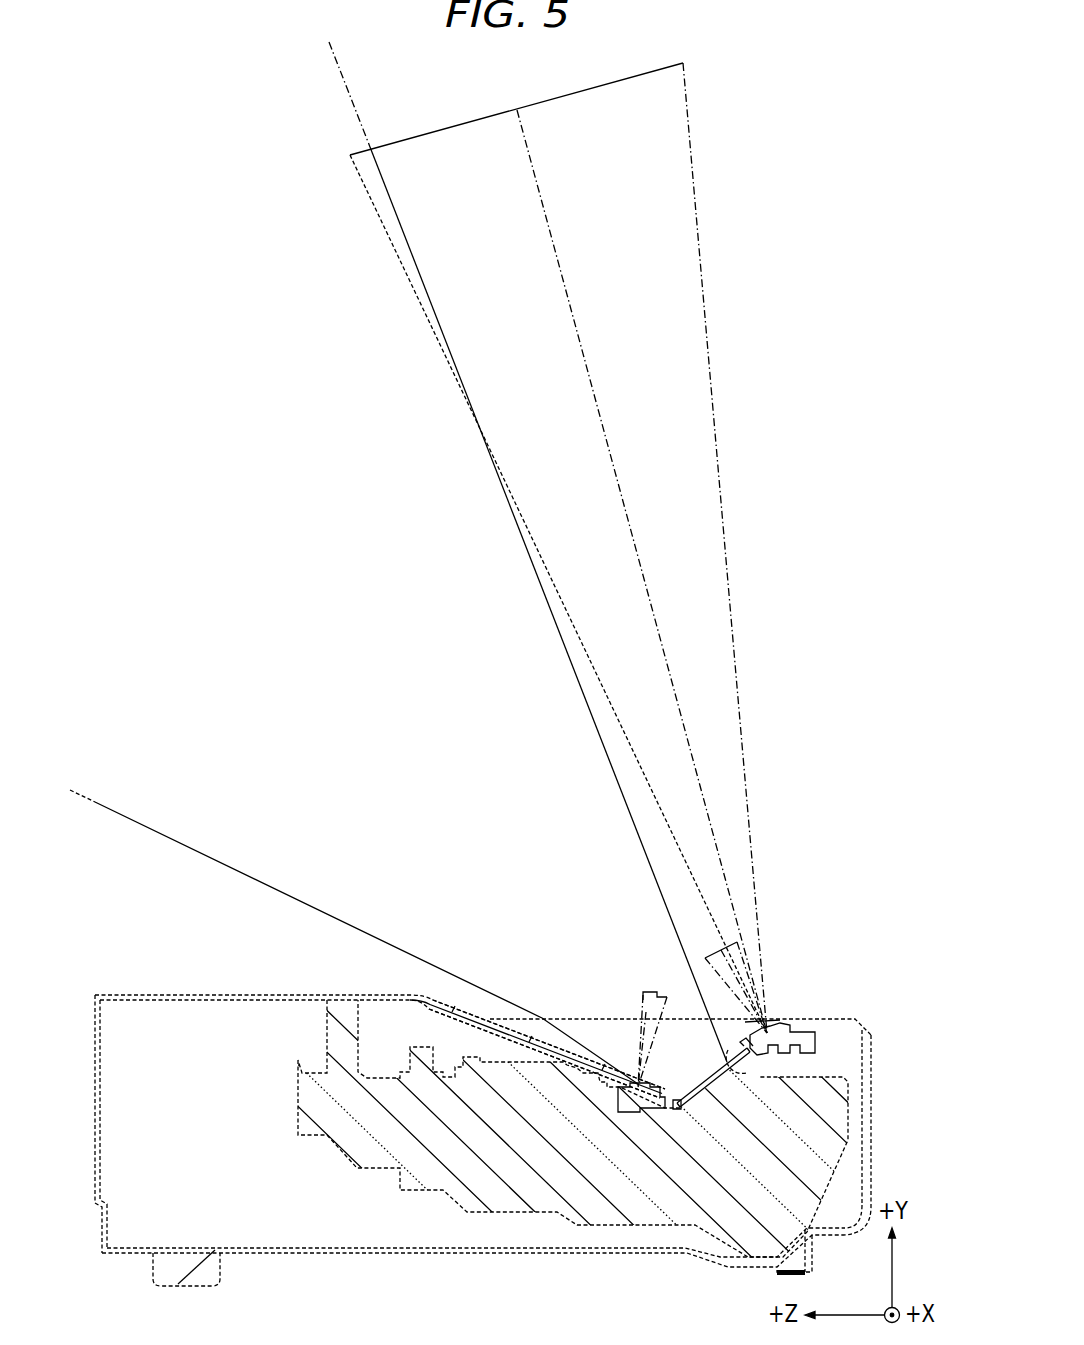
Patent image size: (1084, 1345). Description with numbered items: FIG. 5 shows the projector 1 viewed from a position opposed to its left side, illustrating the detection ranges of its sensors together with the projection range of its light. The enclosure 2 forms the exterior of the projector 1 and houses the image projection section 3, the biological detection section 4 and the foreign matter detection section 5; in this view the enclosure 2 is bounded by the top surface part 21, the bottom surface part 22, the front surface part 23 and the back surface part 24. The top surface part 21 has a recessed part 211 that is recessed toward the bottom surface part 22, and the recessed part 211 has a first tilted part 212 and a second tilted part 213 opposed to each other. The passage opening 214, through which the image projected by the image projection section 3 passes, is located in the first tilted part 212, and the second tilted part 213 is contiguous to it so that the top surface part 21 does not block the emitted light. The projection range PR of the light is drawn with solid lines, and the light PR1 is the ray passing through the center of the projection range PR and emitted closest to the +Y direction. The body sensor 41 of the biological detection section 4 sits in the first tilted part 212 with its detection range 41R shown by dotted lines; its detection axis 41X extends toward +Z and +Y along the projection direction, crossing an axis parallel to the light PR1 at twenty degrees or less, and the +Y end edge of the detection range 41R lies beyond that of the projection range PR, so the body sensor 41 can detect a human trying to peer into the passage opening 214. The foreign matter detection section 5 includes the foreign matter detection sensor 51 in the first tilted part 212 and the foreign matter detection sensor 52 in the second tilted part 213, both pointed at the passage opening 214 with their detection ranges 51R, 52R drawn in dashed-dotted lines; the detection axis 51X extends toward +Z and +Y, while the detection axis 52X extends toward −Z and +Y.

The projector 1 is at (543, 684).
The enclosure 2 is at (499, 1114).
The top surface part 21 is at (510, 1053).
The bottom surface part 22 is at (388, 1255).
The front surface part 23 is at (873, 1098).
The back surface part 24 is at (95, 1078).
The recessed part 211 is at (596, 999).
The first tilted part 212 is at (758, 1027).
The second tilted part 213 is at (467, 1008).
The passage opening 214 is at (762, 1061).
The image projection section 3 is at (337, 1147).
The biological detection section 4 is at (585, 548).
The body sensor 41 is at (561, 548).
The detection range 41R is at (673, 223).
The detection axis 41X is at (559, 263).
The foreign matter detection section 5 is at (687, 1004).
The foreign matter detection sensor 51 is at (787, 976).
The detection range 51R is at (740, 957).
The detection axis 51X is at (721, 950).
The foreign matter detection sensor 52 is at (586, 1021).
The detection range 52R is at (636, 1037).
The detection axis 52X is at (630, 1070).
The projection range PR is at (398, 563).
The light PR1 is at (417, 266).